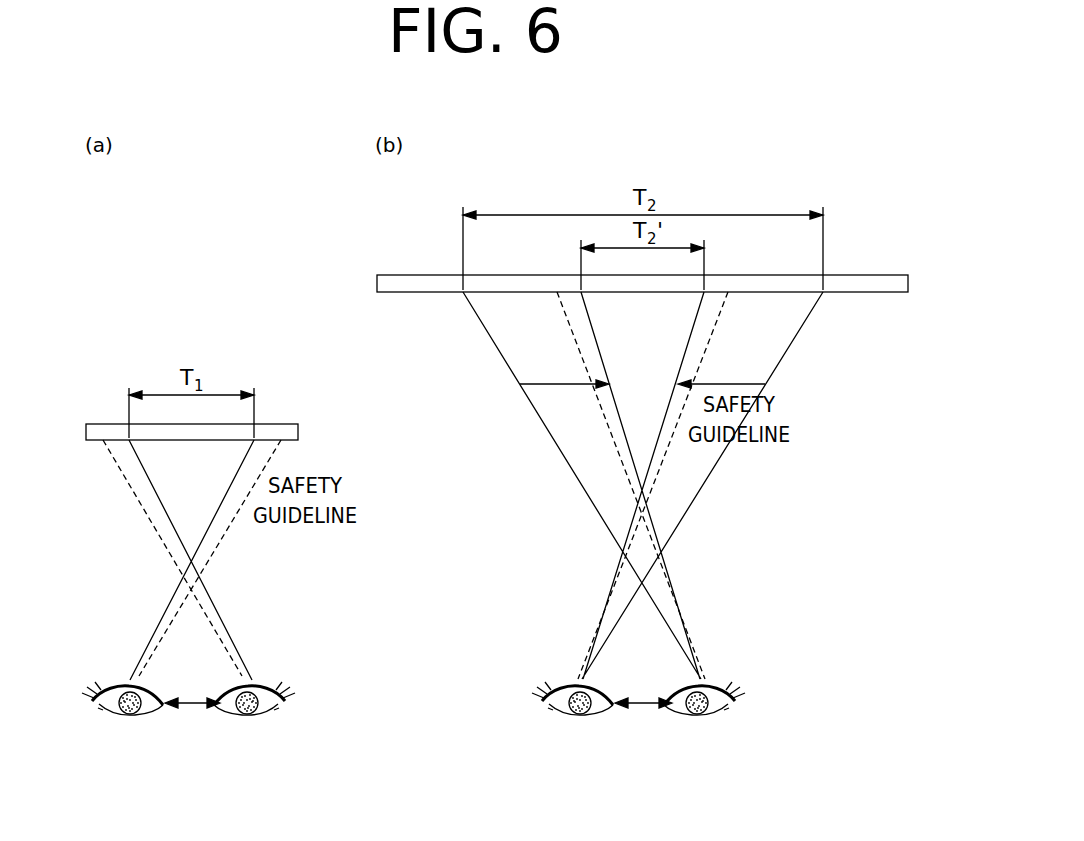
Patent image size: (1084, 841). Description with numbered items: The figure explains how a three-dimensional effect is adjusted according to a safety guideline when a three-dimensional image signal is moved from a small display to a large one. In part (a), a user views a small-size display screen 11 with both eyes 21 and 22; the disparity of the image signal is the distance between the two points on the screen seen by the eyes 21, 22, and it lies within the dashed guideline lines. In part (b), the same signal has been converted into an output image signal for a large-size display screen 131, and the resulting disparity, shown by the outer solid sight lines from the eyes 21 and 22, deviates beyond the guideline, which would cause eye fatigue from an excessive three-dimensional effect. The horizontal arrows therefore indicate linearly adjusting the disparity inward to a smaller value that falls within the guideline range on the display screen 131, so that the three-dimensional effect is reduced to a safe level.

The small-size display screen 11 is at (289, 420).
The display screen 131 is at (903, 270).
The eye 21 is at (123, 717).
The eye 22 is at (243, 717).